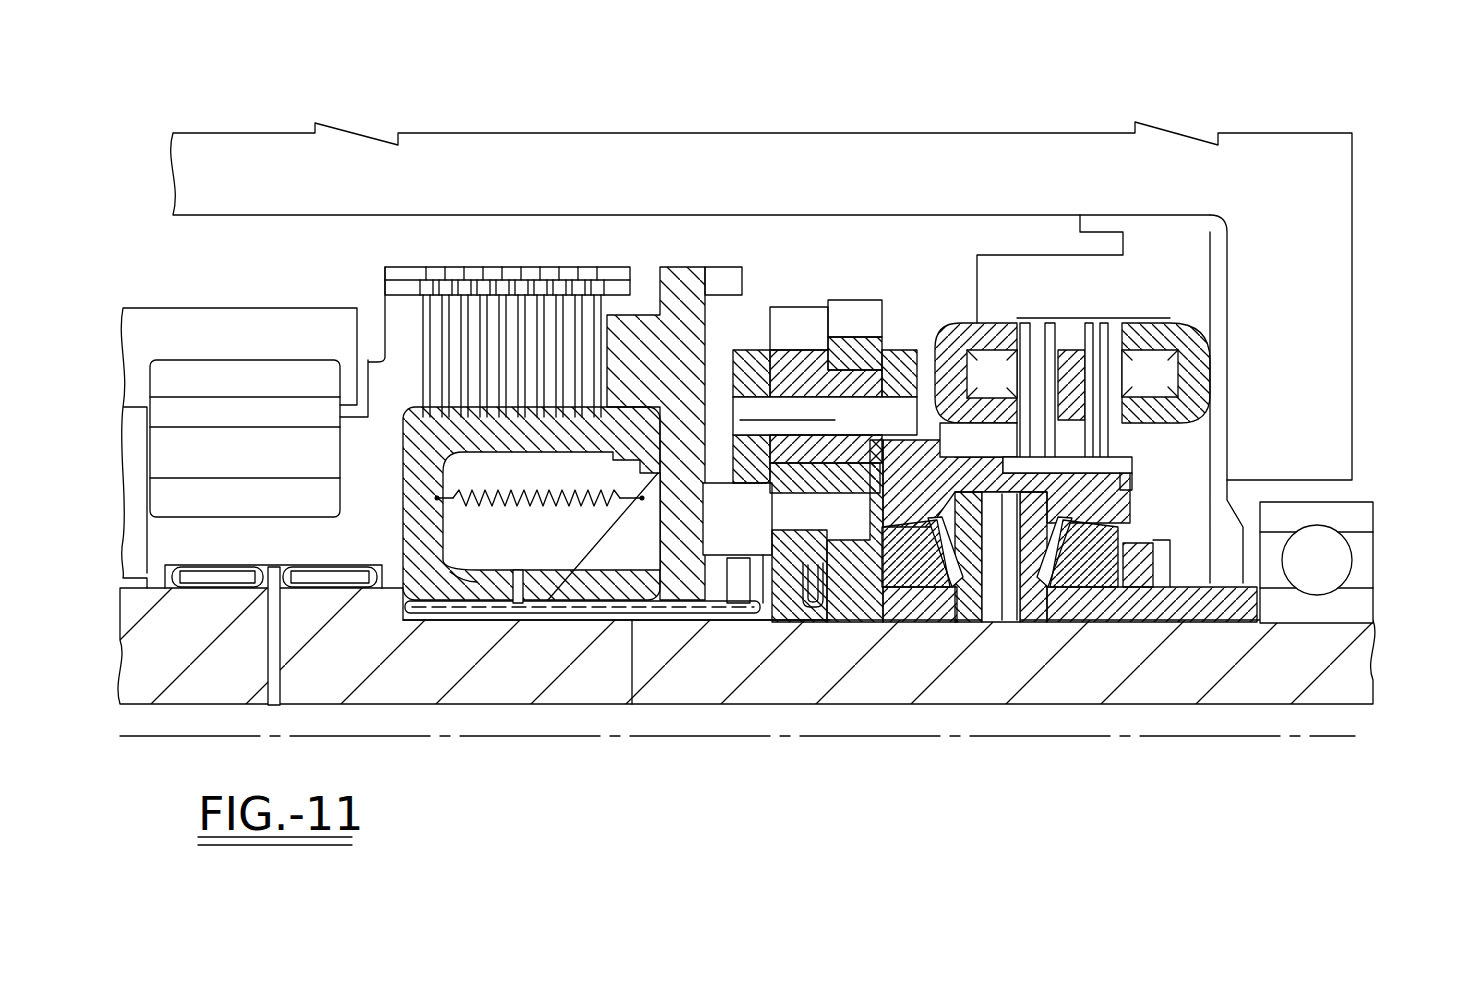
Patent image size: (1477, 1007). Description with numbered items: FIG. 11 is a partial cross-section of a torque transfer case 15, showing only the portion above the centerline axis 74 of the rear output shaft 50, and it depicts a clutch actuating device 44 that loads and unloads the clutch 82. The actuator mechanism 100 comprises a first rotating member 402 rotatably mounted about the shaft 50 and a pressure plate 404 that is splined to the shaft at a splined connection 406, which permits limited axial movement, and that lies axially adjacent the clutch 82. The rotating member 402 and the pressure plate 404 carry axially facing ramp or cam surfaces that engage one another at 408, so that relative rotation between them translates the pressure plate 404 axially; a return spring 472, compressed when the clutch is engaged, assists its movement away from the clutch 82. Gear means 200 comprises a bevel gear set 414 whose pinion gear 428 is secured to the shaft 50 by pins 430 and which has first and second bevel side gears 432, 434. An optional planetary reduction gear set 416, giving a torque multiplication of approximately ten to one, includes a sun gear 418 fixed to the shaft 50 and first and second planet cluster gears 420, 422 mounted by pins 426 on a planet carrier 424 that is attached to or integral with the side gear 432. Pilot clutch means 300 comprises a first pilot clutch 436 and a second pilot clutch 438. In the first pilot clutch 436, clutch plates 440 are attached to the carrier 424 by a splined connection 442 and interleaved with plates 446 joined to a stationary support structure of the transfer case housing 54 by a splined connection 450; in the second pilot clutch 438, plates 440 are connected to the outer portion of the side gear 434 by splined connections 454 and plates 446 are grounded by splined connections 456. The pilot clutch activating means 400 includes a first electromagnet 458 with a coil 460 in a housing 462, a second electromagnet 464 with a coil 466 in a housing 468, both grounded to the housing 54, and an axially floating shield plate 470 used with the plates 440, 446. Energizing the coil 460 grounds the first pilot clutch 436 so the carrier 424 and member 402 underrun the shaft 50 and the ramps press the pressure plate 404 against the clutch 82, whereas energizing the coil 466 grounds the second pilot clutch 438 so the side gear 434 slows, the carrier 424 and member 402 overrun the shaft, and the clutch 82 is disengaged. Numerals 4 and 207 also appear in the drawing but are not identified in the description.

The torque transfer case 15 is at (1090, 108).
The transfer case housing 54 is at (712, 132).
The clutch 82 is at (510, 262).
The pilot clutch means 300 is at (1058, 236).
The planetary reduction gear set 416 is at (823, 298).
The first plurality of planet cluster gears 420 is at (793, 308).
The second plurality of planet cluster gears 422 is at (872, 303).
The planet carrier 424 is at (900, 350).
The housing 462 is at (957, 328).
The first electromagnet 458 is at (934, 398).
The splined connection 442 is at (1003, 470).
The first pilot clutch 436 is at (1010, 318).
The second set of plates 446 is at (1033, 328).
The splined connection 450 is at (1050, 340).
The splined connections 456 is at (1110, 322).
The shield plate 470 is at (1070, 340).
The second pilot clutch 438 is at (1137, 320).
The pilot clutch activating means 400 is at (1192, 317).
The housing 468 is at (1200, 340).
The partial numeral 4 is at (1292, 355).
The second electromagnet 464 is at (1214, 382).
The coil 460 is at (992, 374).
The coil 466 is at (1150, 373).
The clutch plates 440 is at (1017, 441).
The splined connections 454 is at (1132, 471).
The gear means 200 is at (1137, 527).
The second bevel side gear 434 is at (1146, 530).
The bevel gear set 414 is at (1078, 590).
The sun gear 418 is at (877, 623).
The first bevel side gear 432 is at (950, 623).
The pins 430 is at (1020, 623).
The pinion gear 428 is at (1033, 623).
The return spring 472 is at (530, 492).
The pins 426 is at (735, 425).
The first rotating member 402 is at (785, 614).
The pressure plate 404 is at (545, 605).
The splined connection 406 is at (578, 614).
The ramp surface engagement 408 is at (750, 610).
The actuator mechanism 100 is at (733, 630).
The clutch actuating device 44 is at (778, 752).
The centerline axis 74 is at (1085, 740).
The rear output shaft 50 is at (1248, 697).
The bearing block 207 is at (1352, 557).